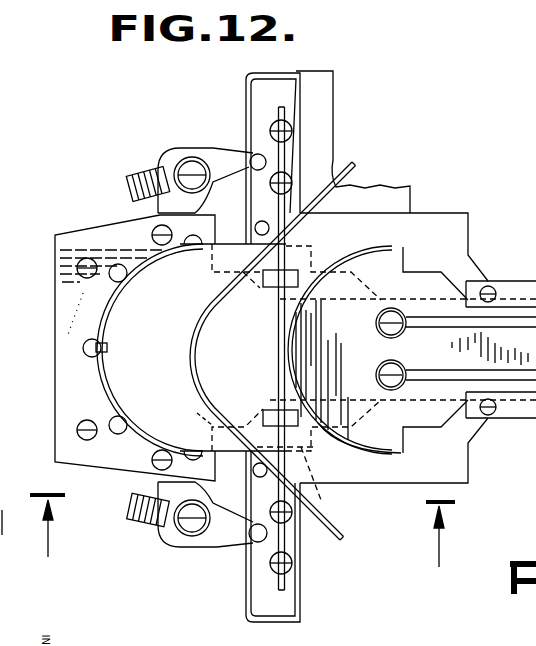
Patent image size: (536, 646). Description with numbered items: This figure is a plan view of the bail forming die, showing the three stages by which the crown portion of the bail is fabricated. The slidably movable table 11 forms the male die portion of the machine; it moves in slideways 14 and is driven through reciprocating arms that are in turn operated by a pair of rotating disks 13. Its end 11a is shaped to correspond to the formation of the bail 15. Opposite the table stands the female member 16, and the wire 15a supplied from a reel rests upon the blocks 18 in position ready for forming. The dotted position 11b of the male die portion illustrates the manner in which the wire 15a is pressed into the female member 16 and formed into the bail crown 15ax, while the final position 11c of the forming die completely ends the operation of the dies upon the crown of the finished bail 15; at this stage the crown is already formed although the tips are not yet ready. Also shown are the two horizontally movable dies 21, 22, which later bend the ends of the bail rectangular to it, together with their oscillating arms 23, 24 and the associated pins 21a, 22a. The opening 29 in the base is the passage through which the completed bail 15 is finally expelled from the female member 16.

The slidably movable table 11 is at (405, 282).
The end of the table 11a is at (328, 435).
The dotted position of the male die portion 11b is at (327, 477).
The final position of the forming die 11c is at (192, 413).
The rotating disks 13 is at (241, 519).
The slideways 14 is at (524, 290).
The bail 15 is at (108, 307).
The wire 15a is at (278, 150).
The bail crown 15ax is at (296, 218).
The female member 16 is at (55, 362).
The blocks 18 is at (264, 274).
The horizontally movable die 21 is at (260, 579).
The lower pivot pin 21a is at (257, 471).
The horizontally movable die 22 is at (256, 100).
The upper pivot pin 22a is at (255, 226).
The oscillating arm 23 is at (133, 509).
The oscillating arm 24 is at (153, 173).
The opening 29 is at (102, 349).